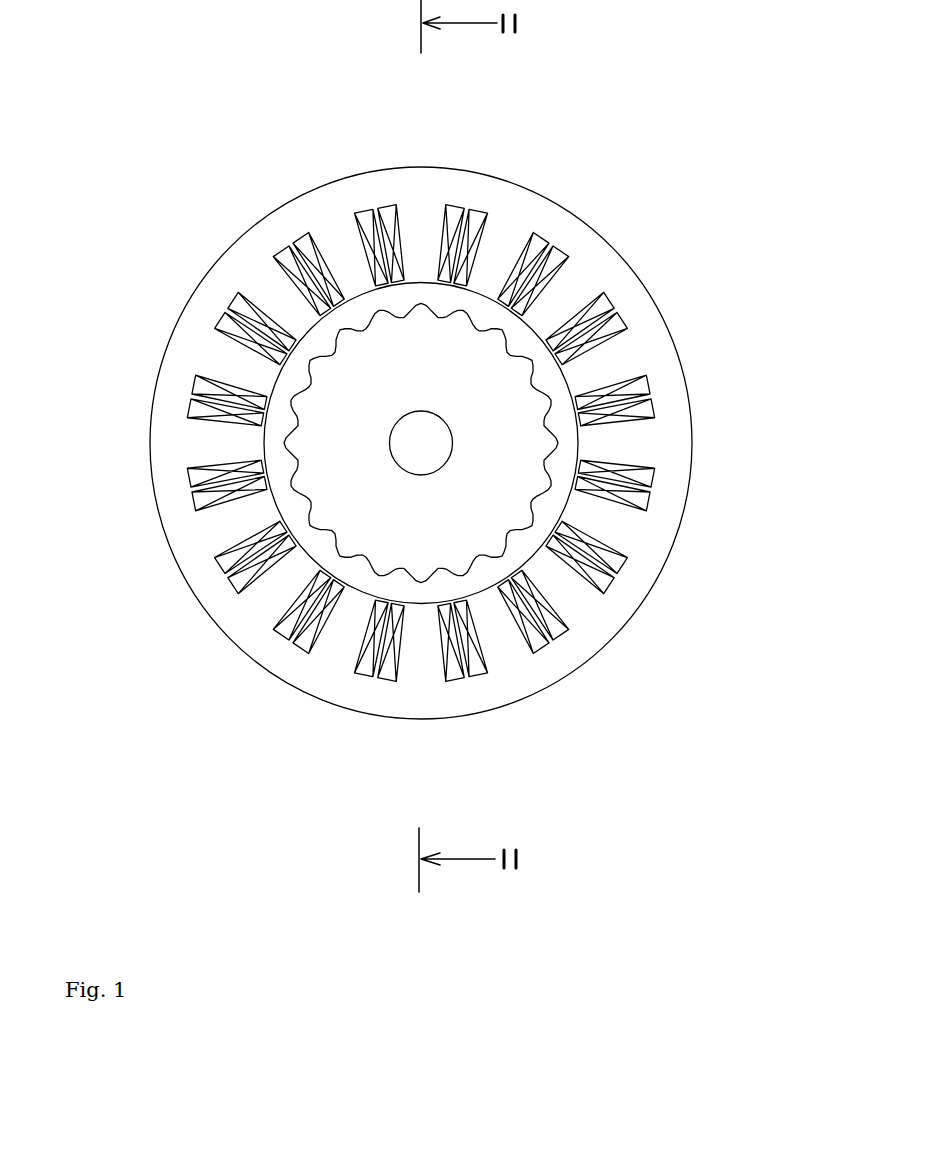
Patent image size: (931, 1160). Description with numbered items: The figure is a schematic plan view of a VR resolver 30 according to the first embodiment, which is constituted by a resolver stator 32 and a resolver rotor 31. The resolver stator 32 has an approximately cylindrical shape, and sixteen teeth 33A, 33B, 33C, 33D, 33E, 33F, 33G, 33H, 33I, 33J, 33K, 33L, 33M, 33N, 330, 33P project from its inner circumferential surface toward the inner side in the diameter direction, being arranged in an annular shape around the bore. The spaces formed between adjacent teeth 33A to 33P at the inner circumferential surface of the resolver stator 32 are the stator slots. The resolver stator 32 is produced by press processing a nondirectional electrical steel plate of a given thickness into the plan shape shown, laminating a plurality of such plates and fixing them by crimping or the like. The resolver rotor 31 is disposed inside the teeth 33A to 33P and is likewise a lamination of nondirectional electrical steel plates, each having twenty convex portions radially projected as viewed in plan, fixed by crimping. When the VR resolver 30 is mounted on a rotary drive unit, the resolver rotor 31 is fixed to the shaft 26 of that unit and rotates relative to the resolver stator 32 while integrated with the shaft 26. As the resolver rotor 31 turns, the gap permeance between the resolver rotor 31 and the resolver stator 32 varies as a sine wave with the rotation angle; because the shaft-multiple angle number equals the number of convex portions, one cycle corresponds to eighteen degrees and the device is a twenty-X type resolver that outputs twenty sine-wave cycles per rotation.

The VR resolver 30 is at (175, 722).
The resolver stator 32 is at (409, 133).
The resolver rotor 31 is at (505, 347).
The shaft 26 is at (440, 468).
The tooth 33A is at (455, 214).
The tooth 33B is at (533, 232).
The tooth 33C is at (600, 292).
The tooth 33D is at (645, 378).
The tooth 33E is at (650, 470).
The tooth 33F is at (623, 560).
The tooth 33G is at (560, 632).
The tooth 33H is at (482, 670).
The tooth 33I is at (387, 683).
The tooth 33J is at (307, 647).
The tooth 33K is at (233, 592).
The tooth 33L is at (207, 507).
The tooth 33M is at (187, 413).
The tooth 33N is at (222, 330).
The tooth 330 is at (278, 250).
The tooth 33P is at (360, 212).